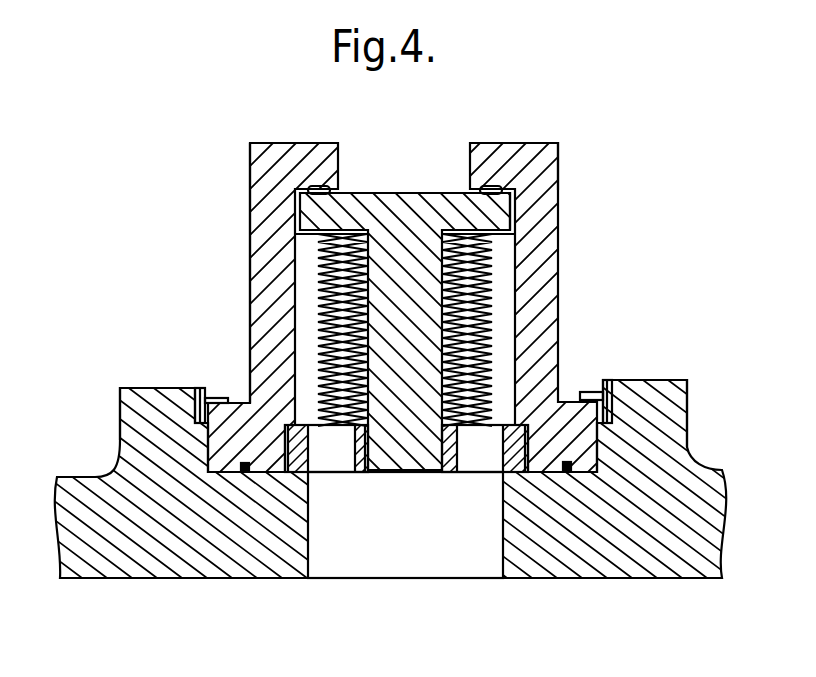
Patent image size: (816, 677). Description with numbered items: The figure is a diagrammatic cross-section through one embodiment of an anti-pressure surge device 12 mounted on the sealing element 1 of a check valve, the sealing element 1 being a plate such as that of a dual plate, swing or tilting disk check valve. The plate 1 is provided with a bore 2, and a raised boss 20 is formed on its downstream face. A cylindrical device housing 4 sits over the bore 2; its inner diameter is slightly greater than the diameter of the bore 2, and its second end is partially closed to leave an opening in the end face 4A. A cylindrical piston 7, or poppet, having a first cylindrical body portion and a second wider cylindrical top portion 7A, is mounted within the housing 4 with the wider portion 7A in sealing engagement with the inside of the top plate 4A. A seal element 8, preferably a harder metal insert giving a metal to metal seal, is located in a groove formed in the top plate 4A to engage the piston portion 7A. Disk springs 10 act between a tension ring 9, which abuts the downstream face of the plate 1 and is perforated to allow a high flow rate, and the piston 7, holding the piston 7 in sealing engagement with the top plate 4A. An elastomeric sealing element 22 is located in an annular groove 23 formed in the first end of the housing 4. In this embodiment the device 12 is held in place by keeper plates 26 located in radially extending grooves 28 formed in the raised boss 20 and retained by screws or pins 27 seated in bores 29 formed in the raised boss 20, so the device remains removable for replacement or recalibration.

The sealing element 1 is at (100, 580).
The bore 2 is at (450, 555).
The cylindrical device housing 4 is at (548, 215).
The end face 4A is at (510, 148).
The cylindrical piston 7 is at (390, 440).
The second wider cylindrical top portion 7A is at (420, 200).
The seal element 8 is at (318, 188).
The tension ring 9 is at (323, 472).
The disk springs 10 is at (500, 307).
The anti-pressure surge device 12 is at (220, 190).
The raised boss 20 is at (680, 398).
The elastomeric sealing element 22 is at (245, 472).
The annular groove 23 is at (567, 472).
The keeper plates 26 is at (219, 396).
The screws or pins 27 is at (200, 392).
The radially extending grooves 28 is at (192, 400).
The bores 29 is at (203, 423).